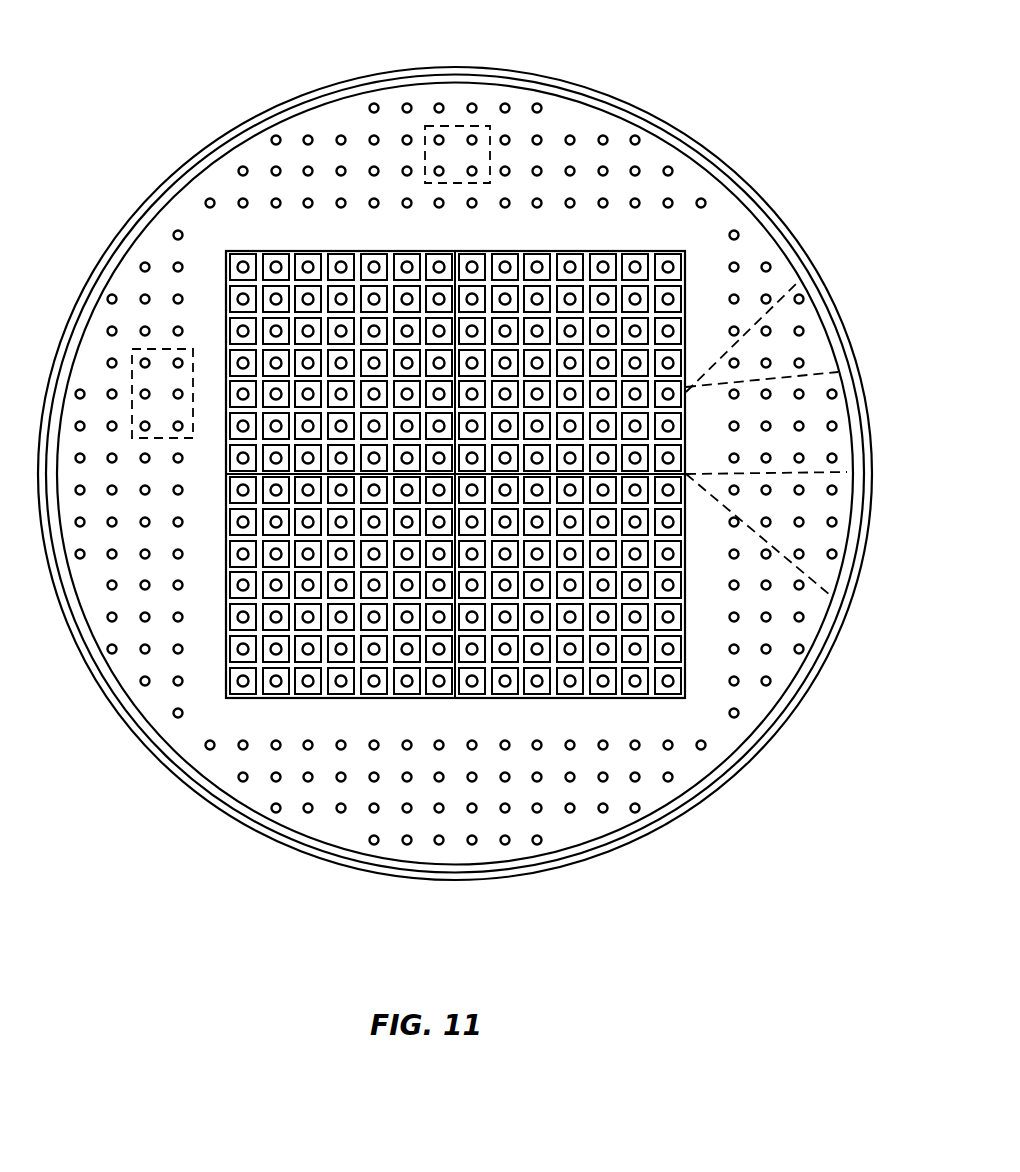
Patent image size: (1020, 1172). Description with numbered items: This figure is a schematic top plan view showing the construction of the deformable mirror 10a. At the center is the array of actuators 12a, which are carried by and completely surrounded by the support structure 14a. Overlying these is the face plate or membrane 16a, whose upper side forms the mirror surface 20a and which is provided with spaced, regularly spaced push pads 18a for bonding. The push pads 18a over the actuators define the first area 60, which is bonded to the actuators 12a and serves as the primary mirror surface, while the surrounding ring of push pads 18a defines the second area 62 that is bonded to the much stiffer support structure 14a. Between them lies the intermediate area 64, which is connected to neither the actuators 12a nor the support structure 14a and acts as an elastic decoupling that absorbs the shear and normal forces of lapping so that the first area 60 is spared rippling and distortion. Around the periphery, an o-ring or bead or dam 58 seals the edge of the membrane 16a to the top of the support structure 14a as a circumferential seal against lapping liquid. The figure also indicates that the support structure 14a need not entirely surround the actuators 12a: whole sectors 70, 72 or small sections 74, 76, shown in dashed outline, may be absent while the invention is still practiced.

The deformable mirror 10a is at (668, 945).
The actuators 12a is at (637, 681).
The support structure 14a is at (845, 373).
The face plate or membrane 16a is at (190, 208).
The push pads 18a is at (440, 102).
The mirror surface 20a is at (714, 242).
The o-ring or bead or dam 58 is at (223, 152).
The first area 60 is at (457, 253).
The second area 62 is at (757, 250).
The intermediate area 64 is at (610, 230).
The sector 70 is at (807, 317).
The sector 72 is at (825, 532).
The small section 74 is at (132, 380).
The small section 76 is at (453, 126).